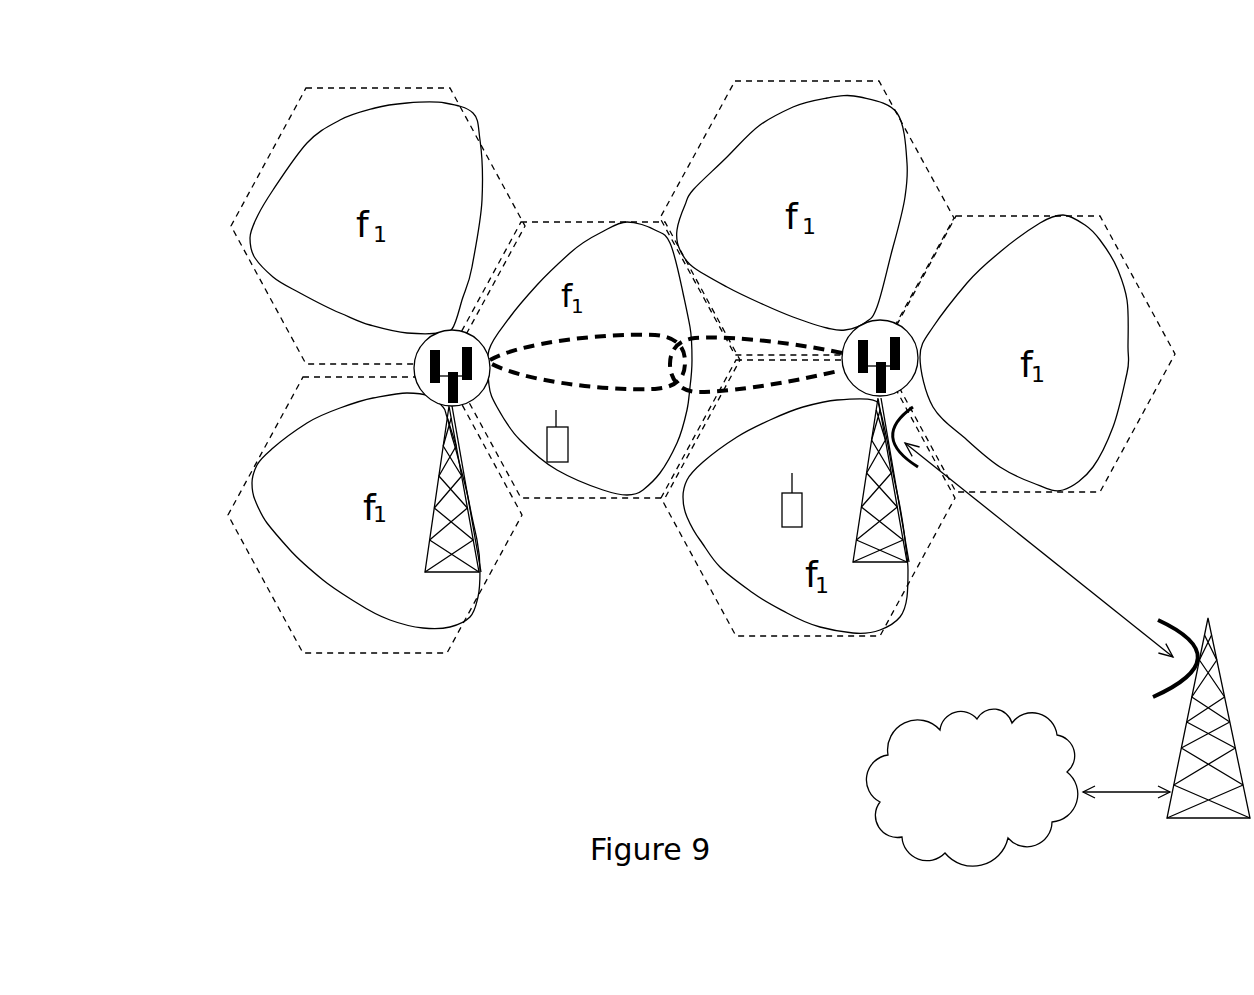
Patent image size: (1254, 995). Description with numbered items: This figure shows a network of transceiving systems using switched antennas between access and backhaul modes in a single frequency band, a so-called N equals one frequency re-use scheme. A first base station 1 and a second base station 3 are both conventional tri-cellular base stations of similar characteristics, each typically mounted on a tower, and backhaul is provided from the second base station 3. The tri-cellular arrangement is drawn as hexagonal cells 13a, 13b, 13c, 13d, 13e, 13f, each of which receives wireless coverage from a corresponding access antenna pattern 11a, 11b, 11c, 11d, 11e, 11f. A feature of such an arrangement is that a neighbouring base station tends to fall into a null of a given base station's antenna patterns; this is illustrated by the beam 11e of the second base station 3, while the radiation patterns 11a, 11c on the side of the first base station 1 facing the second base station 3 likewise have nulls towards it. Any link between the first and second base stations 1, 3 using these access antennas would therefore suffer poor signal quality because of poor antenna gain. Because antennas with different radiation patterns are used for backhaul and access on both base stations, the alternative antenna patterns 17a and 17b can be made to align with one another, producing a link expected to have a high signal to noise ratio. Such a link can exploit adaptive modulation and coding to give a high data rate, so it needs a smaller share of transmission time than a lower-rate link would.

The first base station 1 is at (907, 533).
The second base station 3 is at (480, 537).
The antenna pattern 11a is at (906, 176).
The antenna pattern 11b is at (1117, 284).
The antenna pattern 11c is at (739, 588).
The antenna pattern 11d is at (407, 108).
The antenna pattern 11e is at (574, 243).
The antenna pattern 11f is at (307, 423).
The hexagonal cell 13a is at (785, 82).
The hexagonal cell 13b is at (1005, 216).
The hexagonal cell 13c is at (784, 637).
The hexagonal cell 13d is at (322, 87).
The hexagonal cell 13e is at (556, 500).
The hexagonal cell 13f is at (270, 597).
The antenna pattern 17a is at (764, 319).
The antenna pattern 17b is at (586, 338).